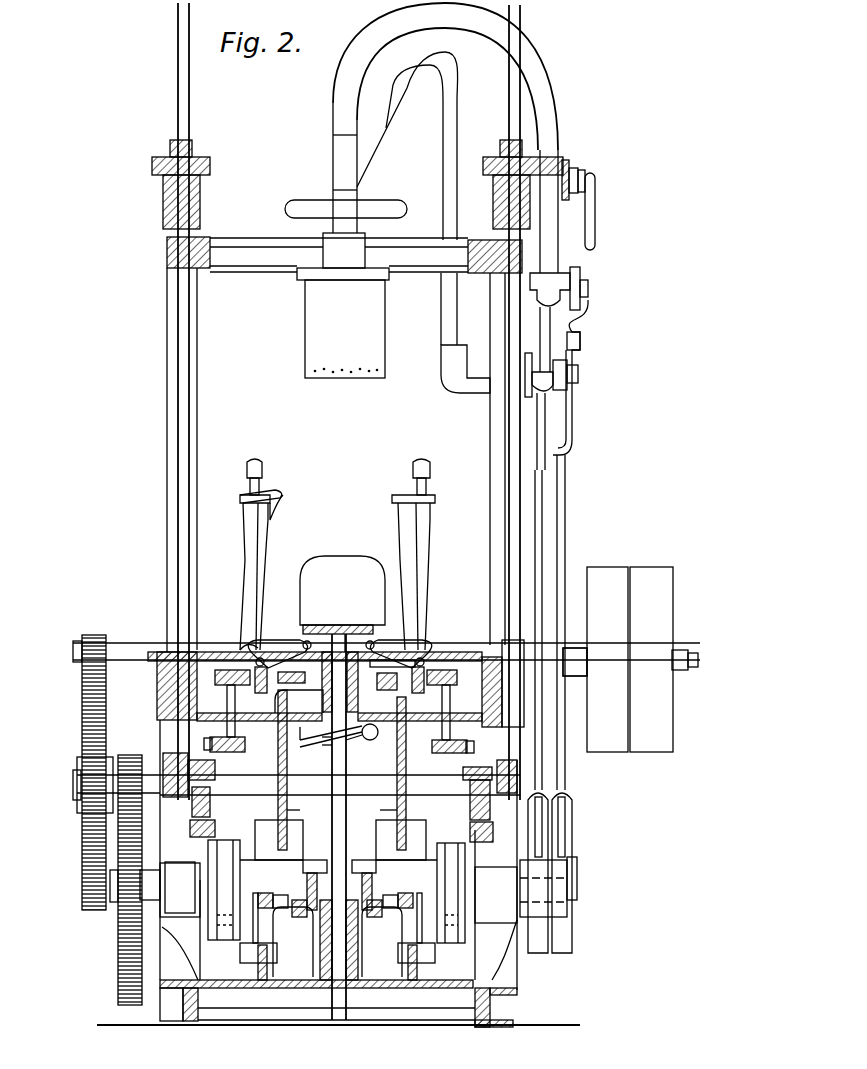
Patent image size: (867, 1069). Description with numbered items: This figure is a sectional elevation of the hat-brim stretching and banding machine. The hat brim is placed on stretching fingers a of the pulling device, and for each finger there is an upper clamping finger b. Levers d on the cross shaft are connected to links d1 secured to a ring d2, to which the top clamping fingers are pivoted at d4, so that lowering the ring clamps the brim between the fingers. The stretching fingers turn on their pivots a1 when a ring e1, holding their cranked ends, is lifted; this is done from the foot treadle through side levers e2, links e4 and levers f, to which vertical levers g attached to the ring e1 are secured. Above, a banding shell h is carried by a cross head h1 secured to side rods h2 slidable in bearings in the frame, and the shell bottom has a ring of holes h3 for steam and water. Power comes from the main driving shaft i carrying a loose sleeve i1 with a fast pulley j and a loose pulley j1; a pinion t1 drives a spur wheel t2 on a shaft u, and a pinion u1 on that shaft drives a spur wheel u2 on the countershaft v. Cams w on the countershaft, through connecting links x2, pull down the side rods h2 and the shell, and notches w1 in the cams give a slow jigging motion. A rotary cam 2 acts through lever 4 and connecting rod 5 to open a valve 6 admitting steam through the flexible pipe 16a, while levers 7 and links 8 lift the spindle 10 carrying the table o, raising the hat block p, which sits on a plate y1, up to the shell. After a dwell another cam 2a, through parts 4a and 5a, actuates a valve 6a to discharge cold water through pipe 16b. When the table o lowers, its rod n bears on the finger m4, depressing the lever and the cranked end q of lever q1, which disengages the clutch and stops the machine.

The banding shell h is at (305, 302).
The cross head h1 is at (243, 243).
The side rods h2 is at (178, 334).
The ring of holes h3 is at (380, 371).
The flexible pipe 16a is at (450, 316).
The pipe 16b is at (485, 22).
The valve 6a is at (575, 290).
The lever 4a is at (590, 318).
The valve 6 is at (575, 378).
The lever 4 is at (574, 404).
The connecting rod 5a is at (566, 520).
The connecting rod 5 is at (538, 590).
The upper clamping finger b is at (255, 462).
The links 8 is at (284, 493).
The stretching finger a is at (414, 498).
The hat block p is at (333, 565).
The plate y1 is at (356, 617).
The table o is at (326, 630).
The pivot a1 is at (246, 642).
The pivot d4 is at (262, 646).
The links d1 is at (228, 702).
The ring d2 is at (440, 662).
The pinion t1 is at (93, 640).
The main driving shaft i is at (131, 652).
The loose sleeve i1 is at (572, 660).
The pinion u1 is at (135, 760).
The shaft u is at (75, 783).
The spur wheel t2 is at (90, 808).
The spur wheel u2 is at (116, 947).
The levers d is at (246, 742).
The ring e1 is at (318, 690).
The rod n is at (294, 740).
The finger m4 is at (326, 750).
The cranked end q is at (322, 764).
The lever q1 is at (375, 740).
The spindle 10 is at (338, 776).
The vertical levers g is at (277, 770).
The connecting links x2 is at (212, 807).
The notches w1 is at (212, 852).
The cams w is at (225, 925).
The levers f is at (266, 892).
The levers 7 is at (295, 920).
The links e4 is at (258, 928).
The side levers e2 is at (262, 978).
The countershaft v is at (158, 890).
The fast pulley j is at (608, 748).
The loose pulley j1 is at (658, 748).
The rotary cam 2 is at (550, 850).
The cam 2a is at (560, 932).